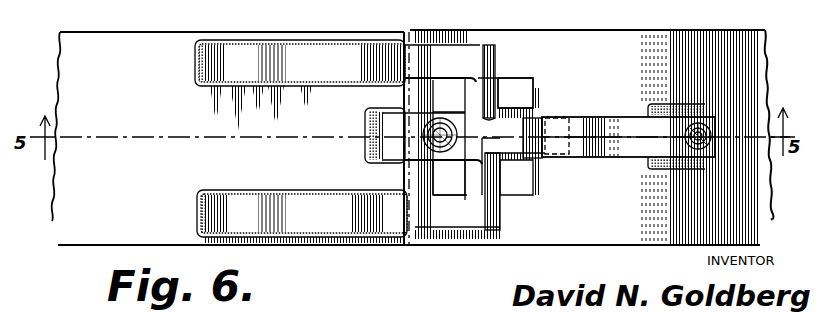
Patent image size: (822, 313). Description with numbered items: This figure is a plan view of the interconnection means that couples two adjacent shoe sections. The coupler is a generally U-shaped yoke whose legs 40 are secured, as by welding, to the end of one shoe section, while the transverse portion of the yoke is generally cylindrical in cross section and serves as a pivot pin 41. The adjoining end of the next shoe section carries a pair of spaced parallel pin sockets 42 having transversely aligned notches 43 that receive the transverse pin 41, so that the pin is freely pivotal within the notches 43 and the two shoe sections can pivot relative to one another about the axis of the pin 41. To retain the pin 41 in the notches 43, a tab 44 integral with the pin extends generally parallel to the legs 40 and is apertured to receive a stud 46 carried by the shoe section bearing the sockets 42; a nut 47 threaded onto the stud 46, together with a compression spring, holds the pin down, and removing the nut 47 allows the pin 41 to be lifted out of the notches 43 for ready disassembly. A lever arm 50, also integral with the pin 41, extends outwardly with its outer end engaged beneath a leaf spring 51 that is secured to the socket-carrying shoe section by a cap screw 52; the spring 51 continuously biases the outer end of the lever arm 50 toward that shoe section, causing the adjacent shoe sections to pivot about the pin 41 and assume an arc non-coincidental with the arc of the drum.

The legs 40 is at (442, 52).
The pivot pin 41 is at (487, 185).
The pin sockets 42 is at (522, 86).
The notches 43 is at (500, 86).
The tab 44 is at (383, 124).
The stud 46 is at (432, 125).
The nut 47 is at (432, 152).
The lever arm 50 is at (522, 130).
The leaf spring 51 is at (615, 118).
The cap screw 52 is at (688, 158).